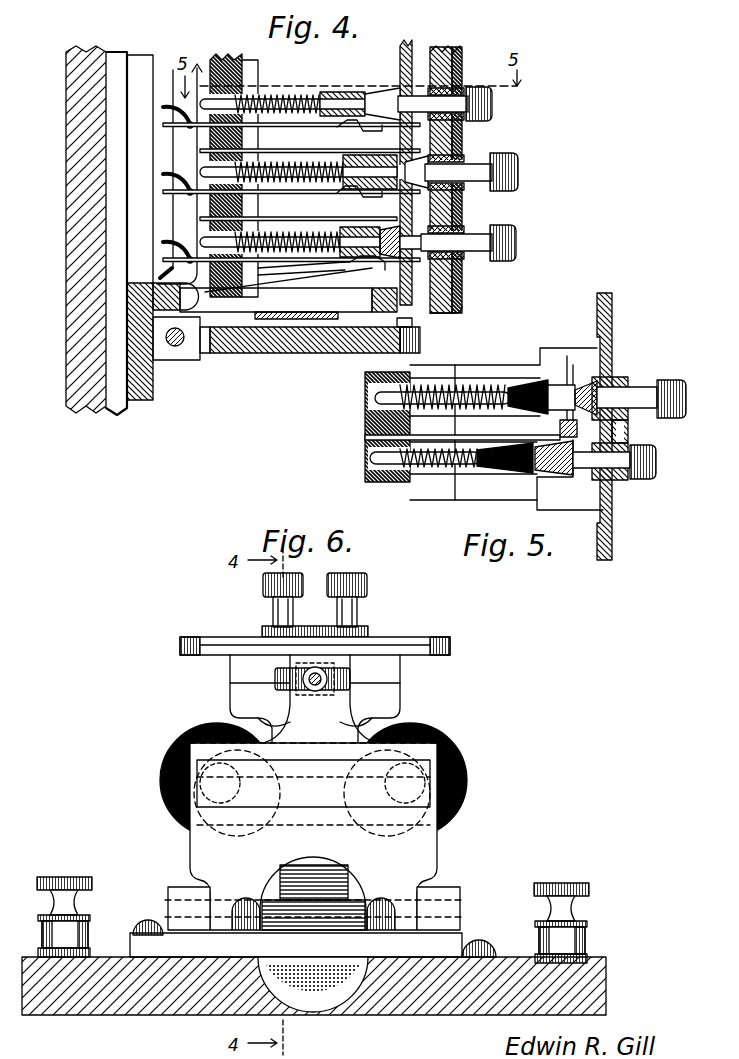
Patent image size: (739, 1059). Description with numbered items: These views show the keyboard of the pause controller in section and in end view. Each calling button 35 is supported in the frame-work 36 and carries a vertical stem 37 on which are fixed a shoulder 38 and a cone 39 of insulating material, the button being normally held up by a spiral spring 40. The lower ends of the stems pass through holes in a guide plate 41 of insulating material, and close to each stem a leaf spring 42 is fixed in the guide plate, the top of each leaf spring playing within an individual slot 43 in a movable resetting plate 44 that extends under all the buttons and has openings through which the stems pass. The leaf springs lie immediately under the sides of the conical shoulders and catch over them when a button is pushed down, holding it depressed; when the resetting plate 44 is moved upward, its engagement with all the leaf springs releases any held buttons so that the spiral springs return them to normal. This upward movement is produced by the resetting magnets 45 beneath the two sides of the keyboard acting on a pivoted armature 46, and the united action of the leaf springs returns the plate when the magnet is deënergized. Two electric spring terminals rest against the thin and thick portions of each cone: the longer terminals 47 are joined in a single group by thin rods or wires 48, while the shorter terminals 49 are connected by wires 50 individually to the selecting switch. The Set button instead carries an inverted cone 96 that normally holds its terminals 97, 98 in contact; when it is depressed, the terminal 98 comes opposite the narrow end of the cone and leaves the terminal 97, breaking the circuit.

In FIG. 4, the button 35 is at (492, 106).
In FIG. 5, the button 35 is at (655, 458).
In FIG. 6, the button 35 is at (291, 586).
In FIG. 4, the frame-work 36 is at (462, 302).
In FIG. 4, the vertical stem 37 is at (459, 102).
In FIG. 5, the vertical stem 37 is at (645, 385).
In FIG. 6, the vertical stem 37 is at (273, 610).
In FIG. 4, the shoulder 38 is at (388, 118).
In FIG. 5, the shoulder 38 is at (592, 378).
In FIG. 4, the cone 39 is at (352, 92).
In FIG. 5, the cone 39 is at (524, 386).
In FIG. 4, the spiral spring 40 is at (293, 99).
In FIG. 5, the spiral spring 40 is at (470, 392).
In FIG. 4, the guide plate 41 is at (218, 60).
In FIG. 5, the guide plate 41 is at (367, 439).
In FIG. 4, the leaf spring 42 is at (205, 218).
In FIG. 5, the leaf spring 42 is at (480, 437).
In FIG. 4, the slot 43 is at (399, 88).
In FIG. 4, the resetting plate 44 is at (412, 46).
In FIG. 5, the resetting plate 44 is at (560, 429).
In FIG. 6, the resetting plate 44 is at (352, 681).
In FIG. 6, the resetting magnet 45 is at (163, 785).
In FIG. 4, the pivoted armature 46 is at (302, 354).
In FIG. 6, the pivoted armature 46 is at (313, 836).
In FIG. 4, the longer spring terminal 47 is at (360, 128).
In FIG. 4, the thin rod or wire 48 is at (172, 222).
In FIG. 4, the shorter spring terminal 49 is at (272, 97).
In FIG. 5, the shorter spring terminal 49 is at (452, 426).
In FIG. 4, the wire 50 is at (170, 100).
In FIG. 6, the wire 50 is at (314, 1005).
In FIG. 4, the inverted cone 96 is at (342, 272).
In FIG. 4, the spring terminal 97 is at (378, 264).
In FIG. 4, the spring terminal 98 is at (272, 276).